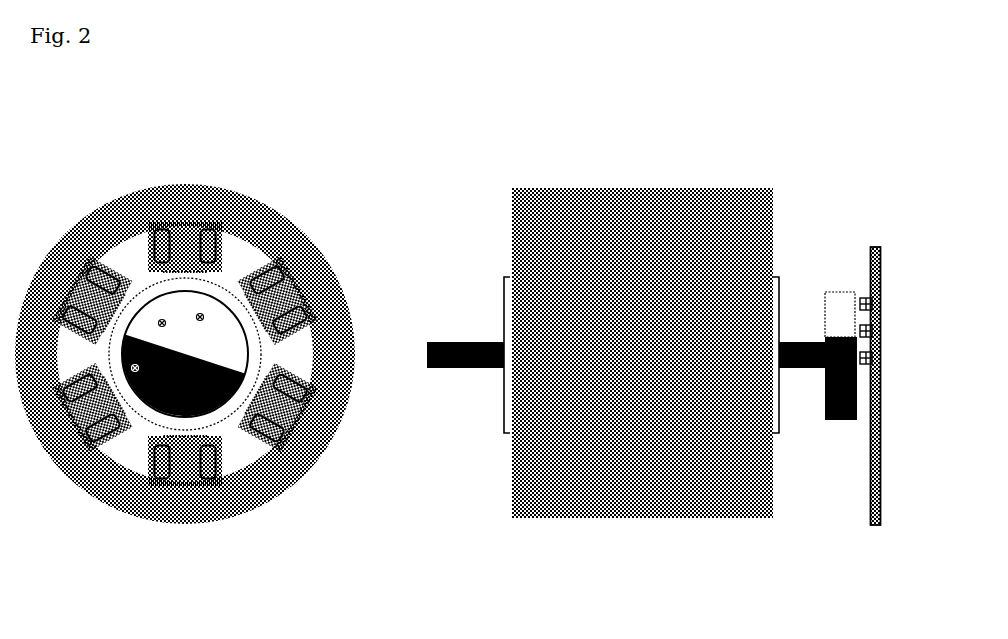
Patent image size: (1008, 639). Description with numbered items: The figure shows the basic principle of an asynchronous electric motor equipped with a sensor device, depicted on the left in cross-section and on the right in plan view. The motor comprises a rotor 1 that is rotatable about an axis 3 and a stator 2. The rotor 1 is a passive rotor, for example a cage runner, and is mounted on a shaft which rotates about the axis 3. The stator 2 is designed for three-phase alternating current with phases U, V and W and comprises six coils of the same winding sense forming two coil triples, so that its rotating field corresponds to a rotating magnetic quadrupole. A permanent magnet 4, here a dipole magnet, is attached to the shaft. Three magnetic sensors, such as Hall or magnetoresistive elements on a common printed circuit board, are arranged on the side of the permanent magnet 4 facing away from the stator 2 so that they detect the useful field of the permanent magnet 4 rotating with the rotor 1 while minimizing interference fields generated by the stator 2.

The rotor 1 is at (155, 288).
The stator 2 is at (312, 262).
The axis 3 is at (442, 370).
The permanent magnet 4 is at (177, 405).